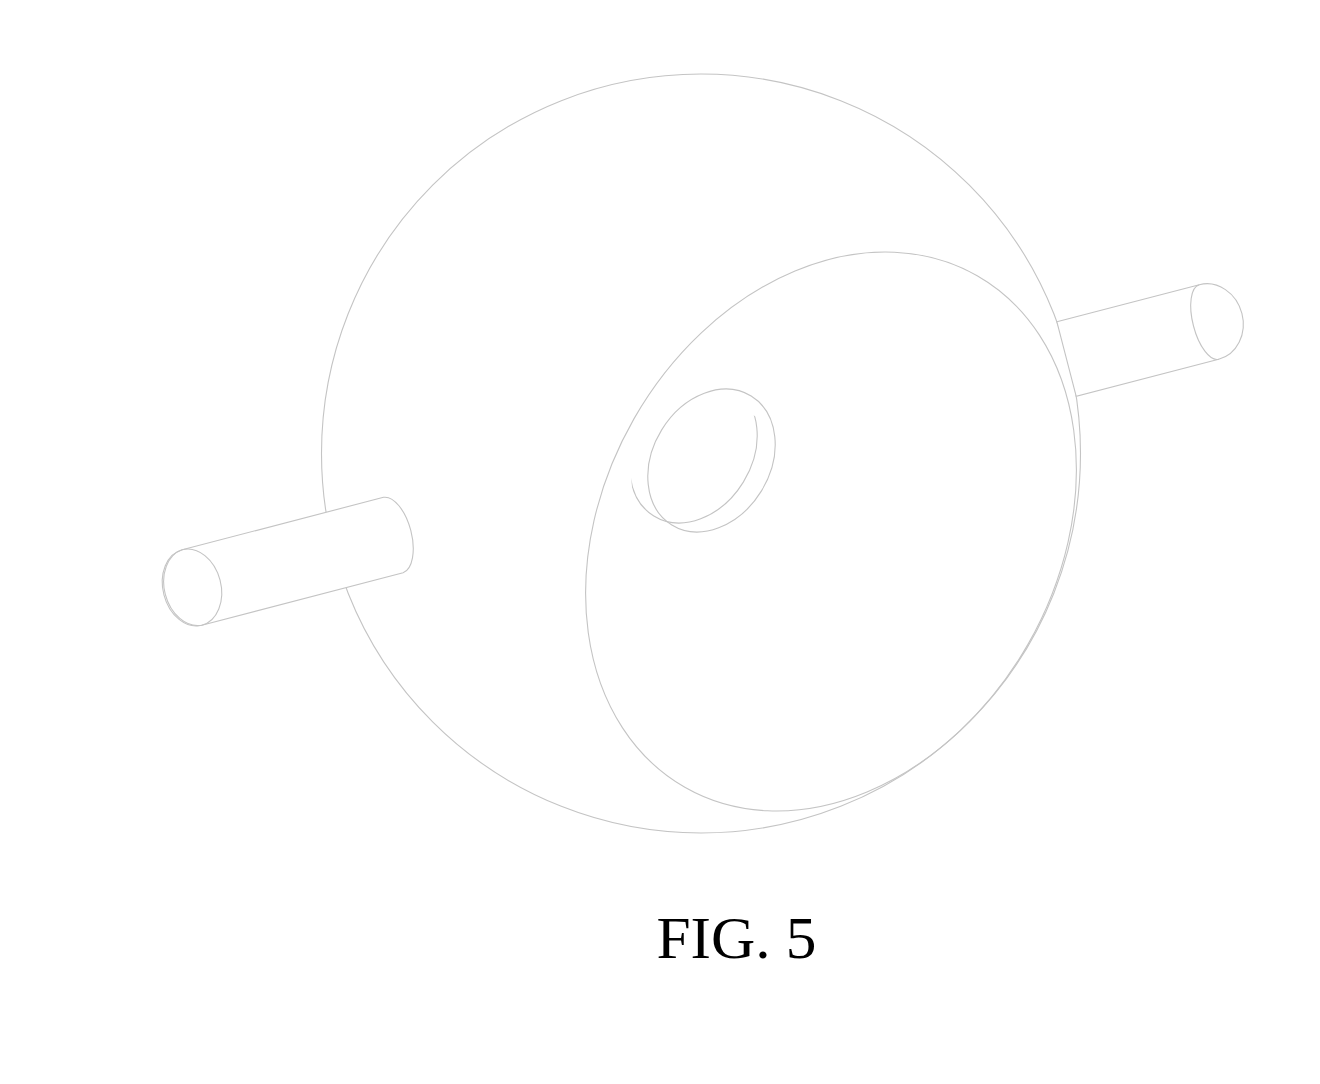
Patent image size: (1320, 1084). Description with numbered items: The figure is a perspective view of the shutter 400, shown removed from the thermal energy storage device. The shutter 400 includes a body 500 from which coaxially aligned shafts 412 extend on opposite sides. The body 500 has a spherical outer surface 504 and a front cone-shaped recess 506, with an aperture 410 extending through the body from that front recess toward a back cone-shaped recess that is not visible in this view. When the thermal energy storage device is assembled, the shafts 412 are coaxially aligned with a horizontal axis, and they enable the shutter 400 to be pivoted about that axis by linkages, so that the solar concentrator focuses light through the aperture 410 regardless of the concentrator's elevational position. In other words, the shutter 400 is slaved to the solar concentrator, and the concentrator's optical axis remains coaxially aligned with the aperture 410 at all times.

The shutter 400 is at (698, 471).
The body 500 is at (748, 471).
The spherical outer surface 504 is at (626, 113).
The front cone-shaped recess 506 is at (900, 707).
The aperture 410 is at (700, 469).
The shafts 412 is at (277, 592).